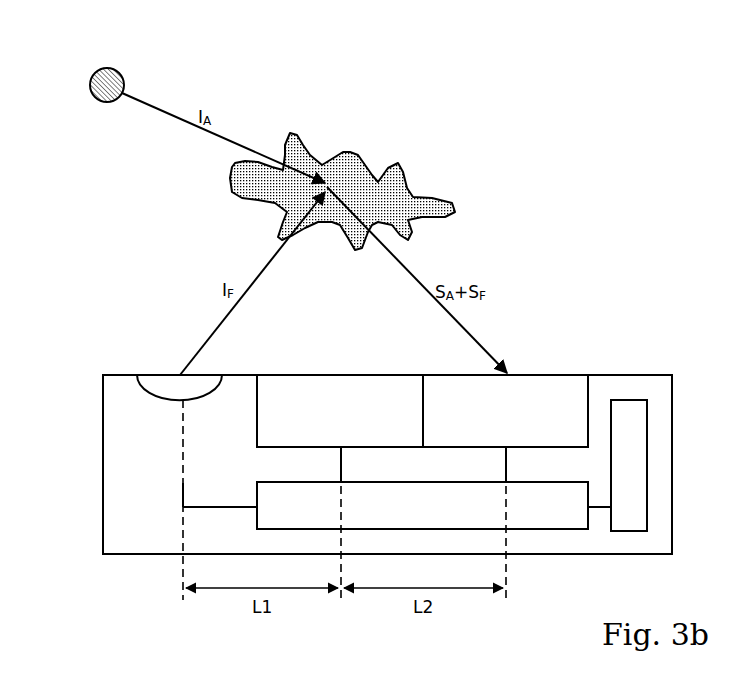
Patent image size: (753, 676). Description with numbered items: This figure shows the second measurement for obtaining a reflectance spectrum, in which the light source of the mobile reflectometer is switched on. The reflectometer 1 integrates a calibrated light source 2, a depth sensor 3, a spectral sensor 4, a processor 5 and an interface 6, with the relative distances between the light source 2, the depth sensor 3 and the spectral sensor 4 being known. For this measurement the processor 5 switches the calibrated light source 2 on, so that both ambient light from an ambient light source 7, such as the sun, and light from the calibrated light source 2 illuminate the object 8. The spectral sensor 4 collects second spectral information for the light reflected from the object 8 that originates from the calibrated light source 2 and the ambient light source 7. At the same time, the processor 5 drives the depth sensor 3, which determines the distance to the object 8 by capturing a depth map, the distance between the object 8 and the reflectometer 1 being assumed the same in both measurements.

The reflectometer 1 is at (102, 467).
The calibrated light source 2 is at (147, 374).
The depth sensor 3 is at (340, 411).
The spectral sensor 4 is at (505, 411).
The processor 5 is at (422, 505).
The interface 6 is at (627, 400).
The ambient light source 7 is at (93, 70).
The object 8 is at (403, 170).